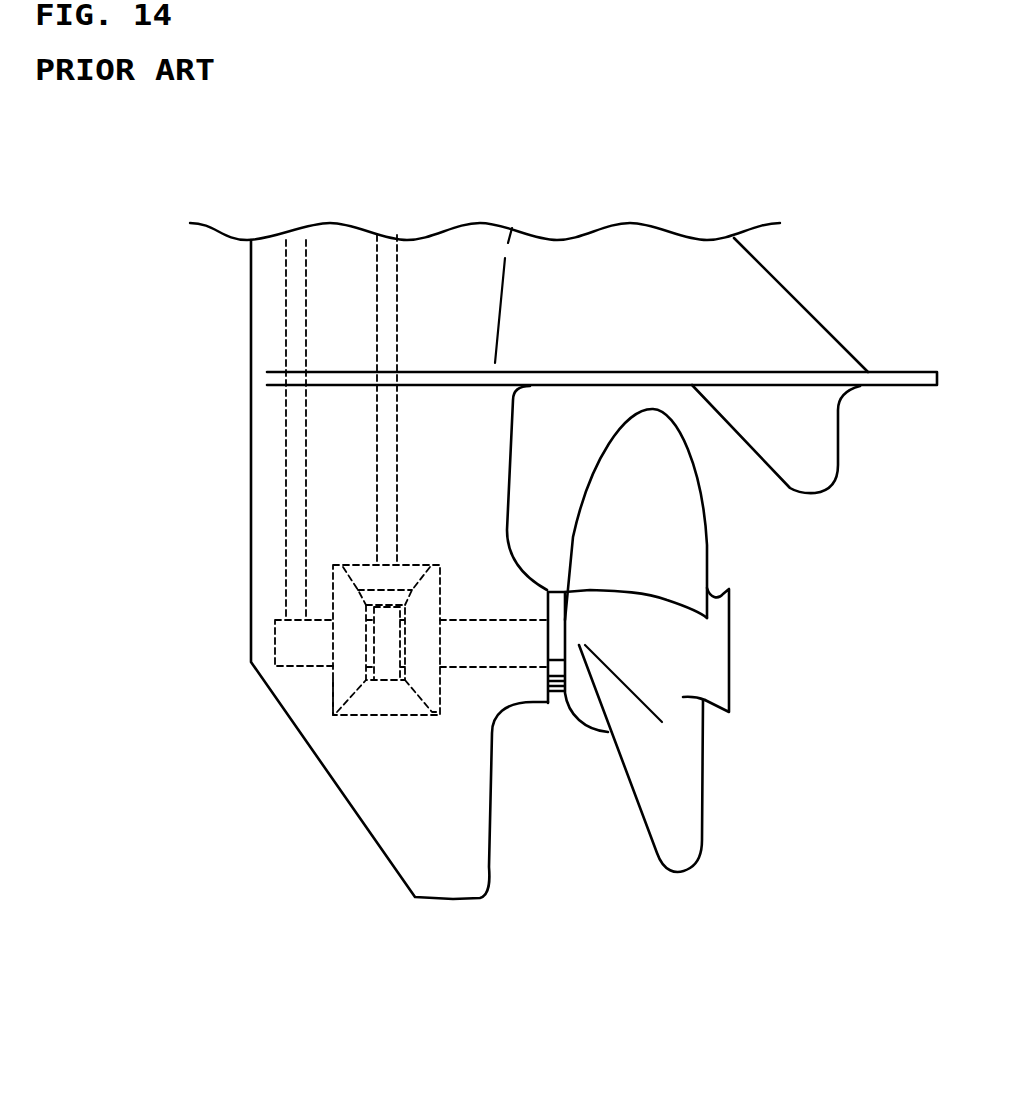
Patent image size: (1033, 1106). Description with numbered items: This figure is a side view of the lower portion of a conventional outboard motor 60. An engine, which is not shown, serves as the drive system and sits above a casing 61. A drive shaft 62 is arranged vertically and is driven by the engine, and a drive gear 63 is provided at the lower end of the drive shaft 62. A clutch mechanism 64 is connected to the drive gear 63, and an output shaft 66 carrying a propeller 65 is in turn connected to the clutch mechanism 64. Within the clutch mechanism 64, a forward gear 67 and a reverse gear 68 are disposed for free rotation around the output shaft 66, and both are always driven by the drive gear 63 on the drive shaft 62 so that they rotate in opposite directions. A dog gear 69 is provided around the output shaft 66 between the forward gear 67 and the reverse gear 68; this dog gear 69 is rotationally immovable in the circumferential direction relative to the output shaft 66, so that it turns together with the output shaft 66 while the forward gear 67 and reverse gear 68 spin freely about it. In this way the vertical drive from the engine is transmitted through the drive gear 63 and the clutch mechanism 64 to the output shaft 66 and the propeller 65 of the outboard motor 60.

The outboard motor 60 is at (803, 283).
The casing 61 is at (847, 340).
The drive shaft 62 is at (397, 333).
The drive gear 63 is at (417, 562).
The clutch mechanism 64 is at (310, 650).
The propeller 65 is at (703, 797).
The output shaft 66 is at (512, 667).
The forward gear 67 is at (333, 688).
The reverse gear 68 is at (412, 695).
The dog gear 69 is at (383, 682).